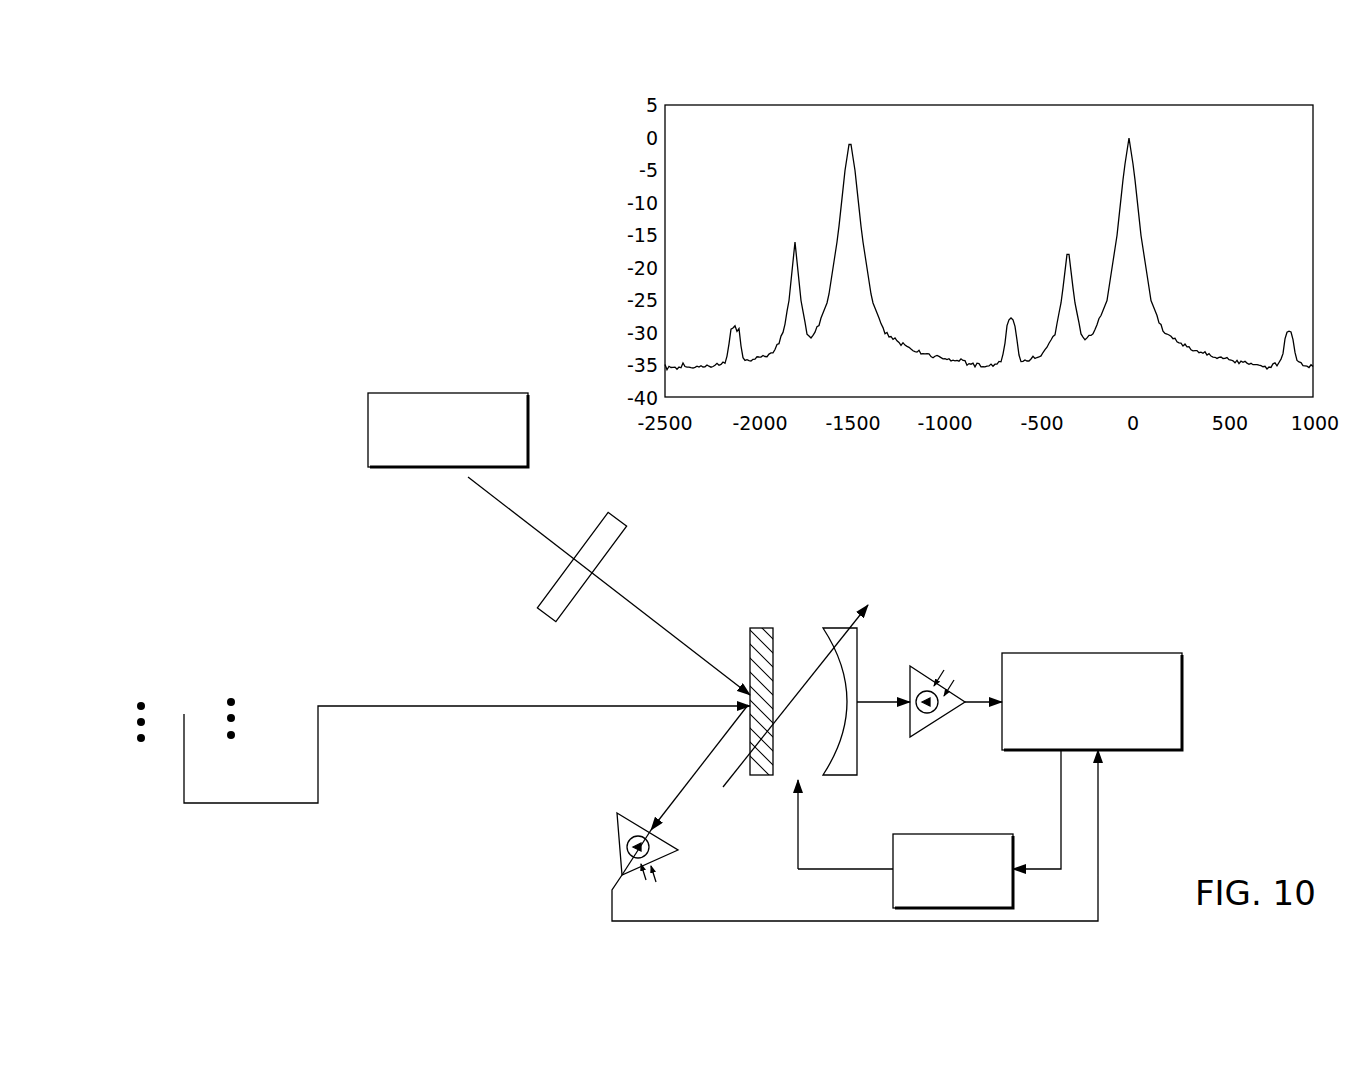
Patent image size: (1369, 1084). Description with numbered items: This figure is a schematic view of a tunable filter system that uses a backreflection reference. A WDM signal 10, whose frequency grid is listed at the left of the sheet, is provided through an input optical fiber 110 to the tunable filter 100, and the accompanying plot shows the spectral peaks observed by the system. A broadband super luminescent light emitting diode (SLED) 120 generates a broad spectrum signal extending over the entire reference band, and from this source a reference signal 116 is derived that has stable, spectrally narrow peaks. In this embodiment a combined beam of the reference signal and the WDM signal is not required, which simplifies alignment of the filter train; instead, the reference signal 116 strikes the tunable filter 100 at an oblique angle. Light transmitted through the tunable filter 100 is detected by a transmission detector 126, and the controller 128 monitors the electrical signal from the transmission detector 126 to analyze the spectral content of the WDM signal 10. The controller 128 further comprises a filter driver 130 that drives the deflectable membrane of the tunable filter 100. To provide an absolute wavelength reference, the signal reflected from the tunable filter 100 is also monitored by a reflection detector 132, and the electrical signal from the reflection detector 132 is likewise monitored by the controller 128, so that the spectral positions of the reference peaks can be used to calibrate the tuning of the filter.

The WDM signal 10 is at (277, 447).
The tunable filter 100 is at (755, 623).
The input optical fiber 110 is at (378, 705).
The reference signal 116 is at (633, 607).
The broadband super luminescent light emitting diode (SLED) 120 is at (462, 392).
The transmission detector 126 is at (917, 665).
The controller 128 is at (1032, 652).
The filter driver 130 is at (943, 832).
The reflection detector 132 is at (612, 517).